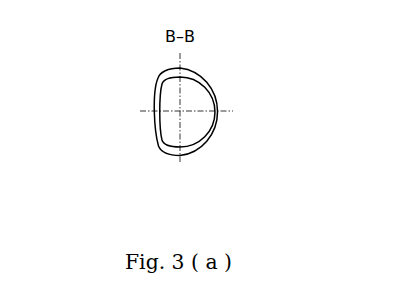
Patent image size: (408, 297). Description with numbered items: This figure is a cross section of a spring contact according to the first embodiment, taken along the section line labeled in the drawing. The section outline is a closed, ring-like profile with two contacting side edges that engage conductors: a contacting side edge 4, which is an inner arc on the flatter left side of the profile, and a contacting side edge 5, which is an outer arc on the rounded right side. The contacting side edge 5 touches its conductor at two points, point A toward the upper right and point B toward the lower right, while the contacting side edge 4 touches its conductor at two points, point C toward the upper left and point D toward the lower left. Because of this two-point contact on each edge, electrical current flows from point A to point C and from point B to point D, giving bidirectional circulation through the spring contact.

The contacting side edge 4 is at (155, 103).
The contacting side edge 5 is at (226, 101).
The contact point A is at (218, 90).
The contact point B is at (220, 130).
The contact point C is at (156, 86).
The contact point D is at (153, 140).